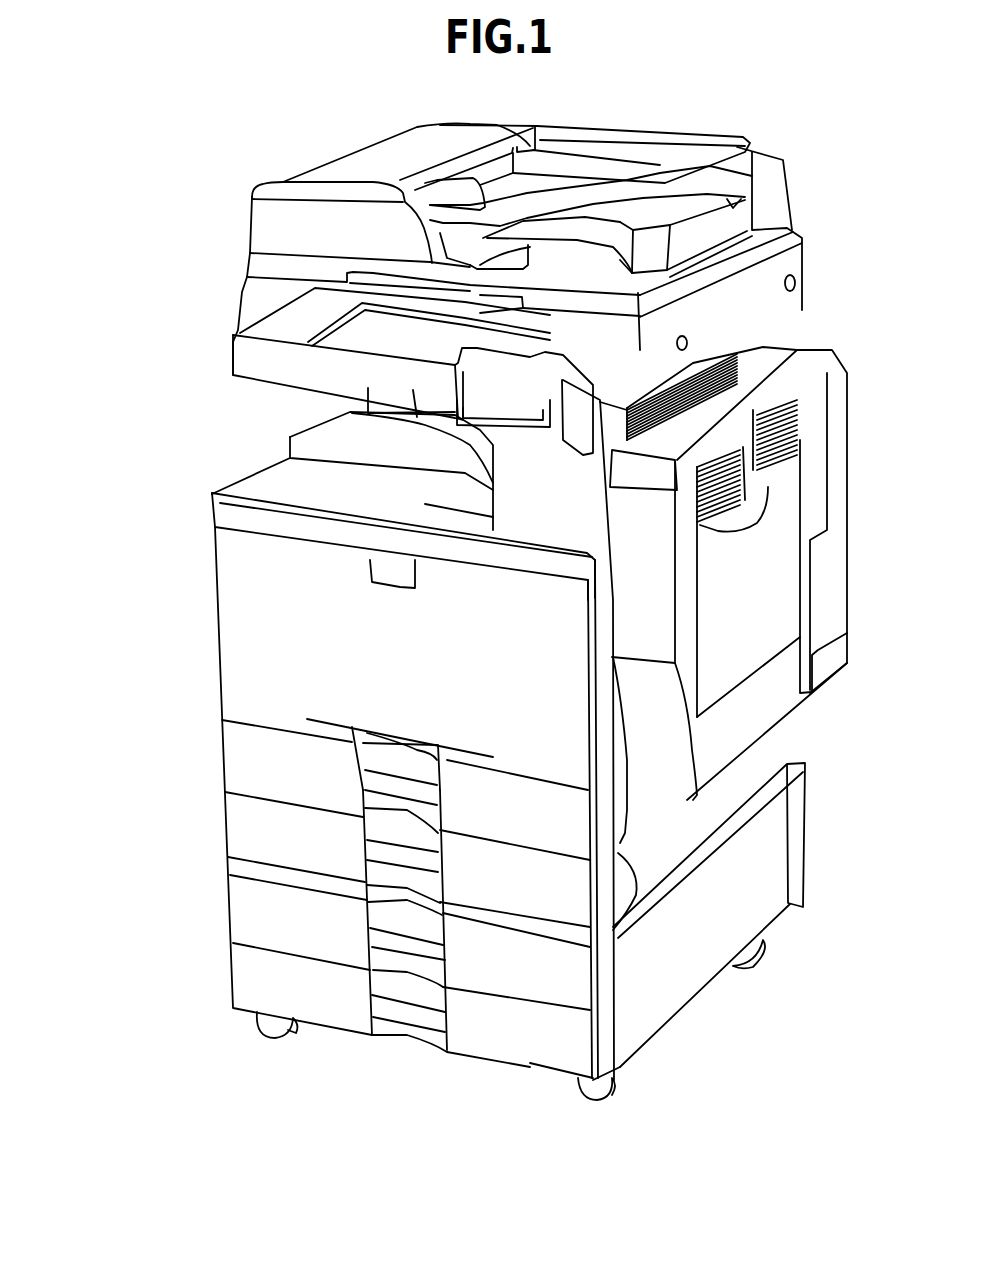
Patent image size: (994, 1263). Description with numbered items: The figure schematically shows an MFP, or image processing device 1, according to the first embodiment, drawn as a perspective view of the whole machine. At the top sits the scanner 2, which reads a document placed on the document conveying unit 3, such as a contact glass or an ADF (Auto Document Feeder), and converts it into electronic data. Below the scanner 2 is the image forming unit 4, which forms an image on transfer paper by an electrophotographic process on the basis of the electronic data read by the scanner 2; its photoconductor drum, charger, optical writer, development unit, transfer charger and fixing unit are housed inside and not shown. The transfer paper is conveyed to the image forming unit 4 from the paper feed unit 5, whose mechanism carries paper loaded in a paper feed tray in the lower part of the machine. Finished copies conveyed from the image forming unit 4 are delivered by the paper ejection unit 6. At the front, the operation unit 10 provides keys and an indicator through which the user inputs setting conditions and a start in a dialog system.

The MFP (image processing device) 1 is at (908, 1007).
The scanner 2 is at (273, 224).
The document conveying unit 3 is at (748, 140).
The image forming unit 4 is at (313, 640).
The paper feed unit 5 is at (313, 880).
The paper ejection unit 6 is at (417, 467).
The operation unit 10 is at (455, 378).